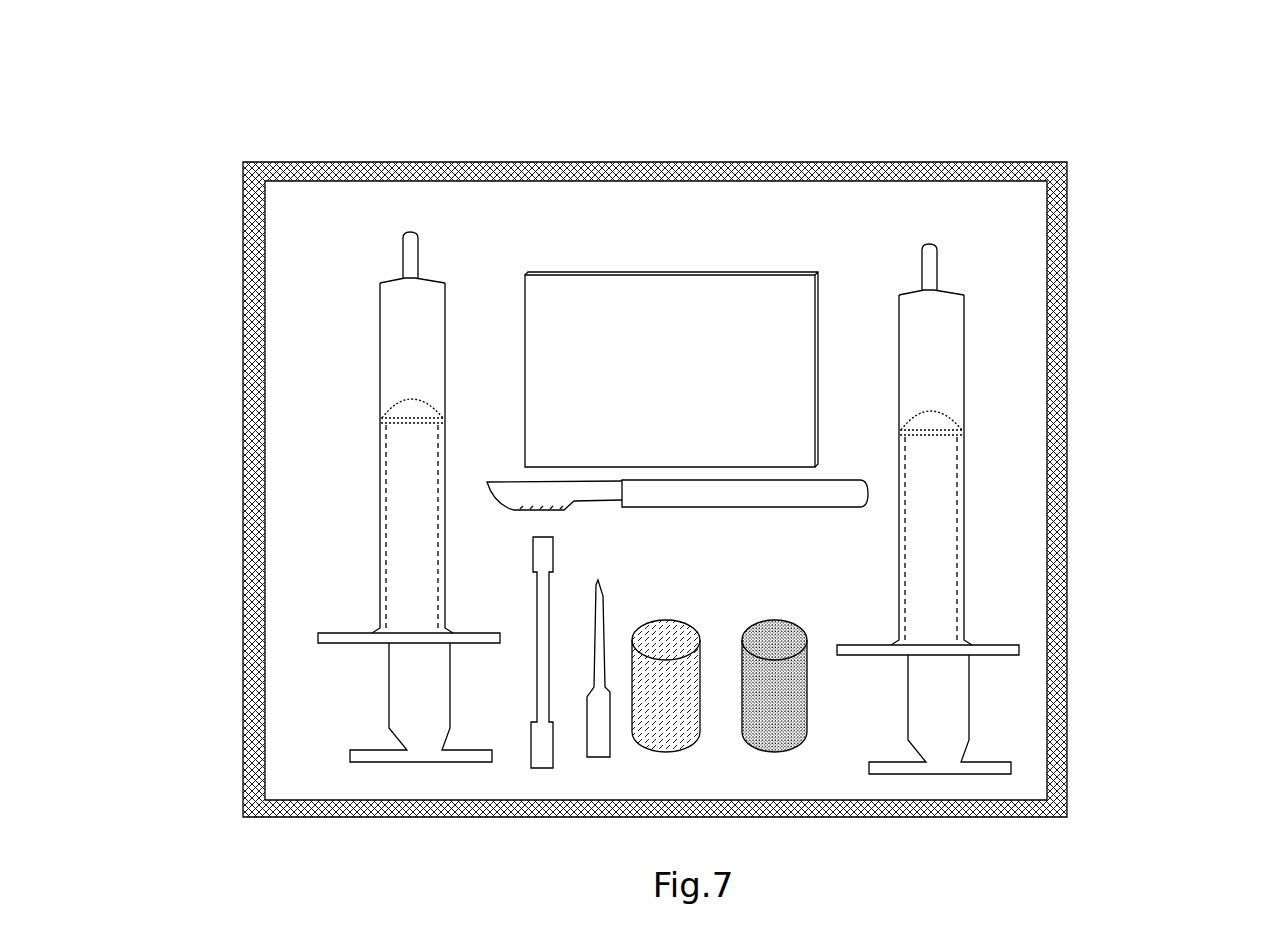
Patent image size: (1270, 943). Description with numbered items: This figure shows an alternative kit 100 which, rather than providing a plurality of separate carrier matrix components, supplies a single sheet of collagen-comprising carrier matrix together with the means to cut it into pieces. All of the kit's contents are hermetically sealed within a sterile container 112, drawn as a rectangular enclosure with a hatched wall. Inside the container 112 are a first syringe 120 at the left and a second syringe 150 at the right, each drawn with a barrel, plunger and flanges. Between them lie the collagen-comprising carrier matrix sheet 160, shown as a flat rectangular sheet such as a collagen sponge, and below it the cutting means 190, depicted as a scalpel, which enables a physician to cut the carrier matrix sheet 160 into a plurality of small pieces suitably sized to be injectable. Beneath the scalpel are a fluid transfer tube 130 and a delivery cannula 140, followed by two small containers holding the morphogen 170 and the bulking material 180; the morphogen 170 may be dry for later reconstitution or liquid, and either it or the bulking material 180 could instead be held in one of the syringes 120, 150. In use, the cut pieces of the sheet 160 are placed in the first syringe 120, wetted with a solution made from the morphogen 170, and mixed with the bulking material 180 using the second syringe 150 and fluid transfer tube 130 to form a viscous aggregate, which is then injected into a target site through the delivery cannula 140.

The kit 100 is at (1135, 163).
The sterile container 112 is at (1068, 470).
The first syringe 120 is at (368, 455).
The fluid transfer tube 130 is at (523, 663).
The delivery cannula 140 is at (588, 655).
The second syringe 150 is at (982, 518).
The collagen-comprising carrier matrix sheet 160 is at (644, 381).
The morphogen 170 is at (668, 633).
The bulking material 180 is at (780, 633).
The cutting means 190 is at (516, 524).